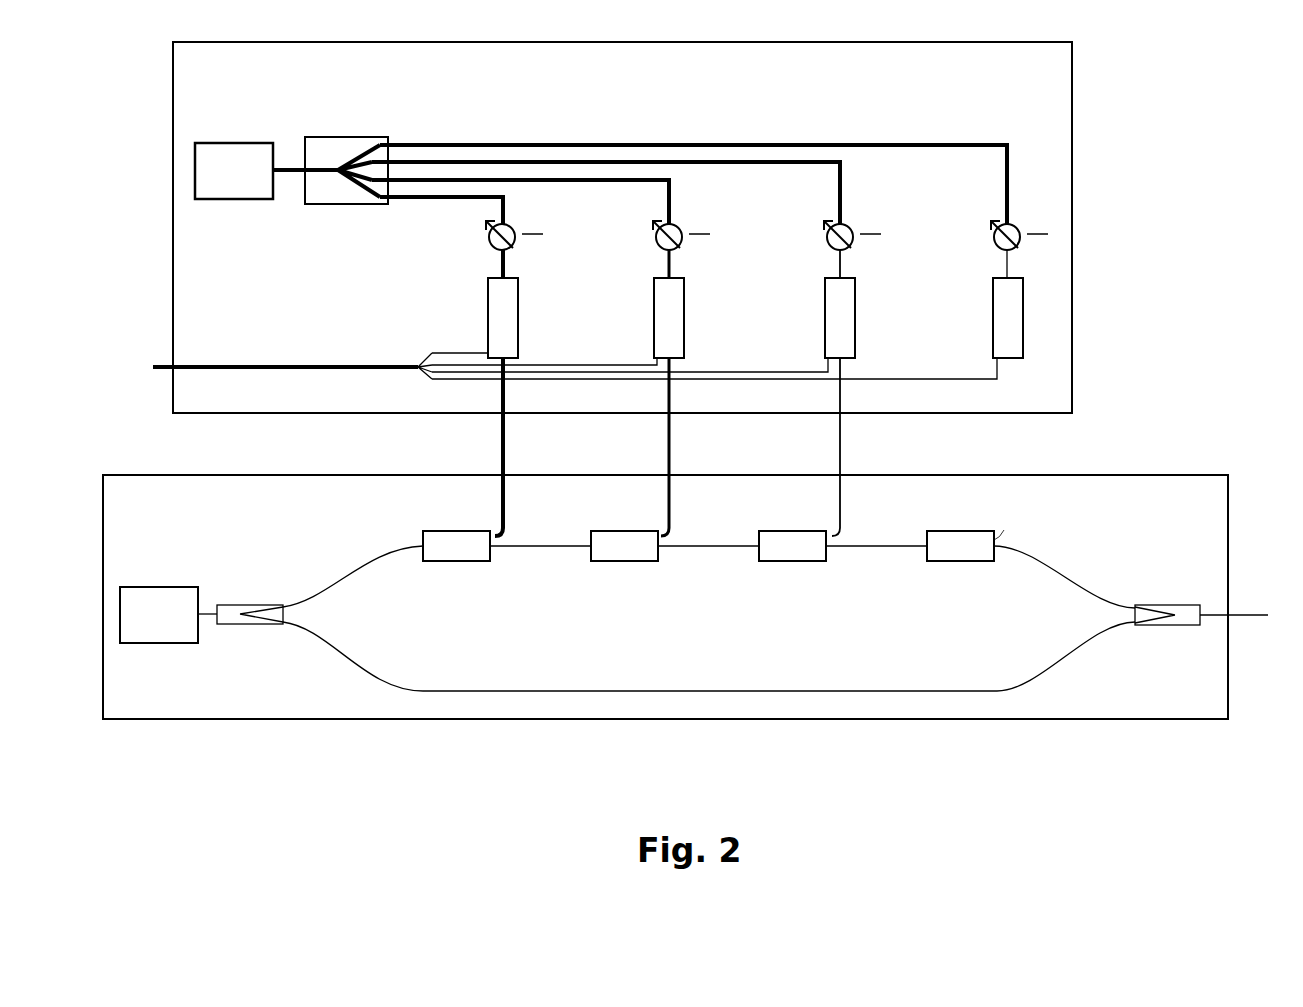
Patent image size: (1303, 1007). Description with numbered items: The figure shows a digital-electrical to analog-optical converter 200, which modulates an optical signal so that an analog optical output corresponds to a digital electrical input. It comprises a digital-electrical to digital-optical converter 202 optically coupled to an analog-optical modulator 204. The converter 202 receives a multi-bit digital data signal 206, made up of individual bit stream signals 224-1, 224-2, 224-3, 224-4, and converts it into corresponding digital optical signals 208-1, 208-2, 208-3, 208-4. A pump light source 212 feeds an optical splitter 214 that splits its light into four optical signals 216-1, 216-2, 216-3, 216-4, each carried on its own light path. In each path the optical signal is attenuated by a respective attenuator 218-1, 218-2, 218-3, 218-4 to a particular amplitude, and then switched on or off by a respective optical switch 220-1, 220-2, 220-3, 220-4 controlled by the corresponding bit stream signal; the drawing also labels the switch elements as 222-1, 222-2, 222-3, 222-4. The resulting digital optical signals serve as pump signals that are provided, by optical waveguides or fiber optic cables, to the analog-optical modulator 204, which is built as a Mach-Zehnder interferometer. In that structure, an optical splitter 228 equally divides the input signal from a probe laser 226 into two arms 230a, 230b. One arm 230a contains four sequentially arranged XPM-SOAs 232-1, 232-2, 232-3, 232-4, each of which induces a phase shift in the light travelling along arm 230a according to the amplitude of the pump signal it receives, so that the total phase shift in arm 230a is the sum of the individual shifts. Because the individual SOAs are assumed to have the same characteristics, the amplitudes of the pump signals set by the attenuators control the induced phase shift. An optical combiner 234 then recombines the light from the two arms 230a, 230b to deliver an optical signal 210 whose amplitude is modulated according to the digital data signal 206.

The digital-electrical to analog-optical converter 200 is at (728, 18).
The digital-electrical to digital-optical converter 202 is at (1048, 95).
The analog-optical modulator 204 is at (1206, 503).
The multi-bit digital data signal 206 is at (130, 352).
The digital optical signal 208-1 is at (500, 440).
The digital optical signal 208-2 is at (667, 440).
The digital optical signal 208-3 is at (838, 440).
The digital optical signal 208-4 is at (1003, 440).
The optical signal 210 is at (1268, 613).
The light source 212 is at (230, 202).
The optical splitter 214 is at (343, 207).
The optical signal 216-1 is at (403, 197).
The optical signal 216-2 is at (492, 180).
The optical signal 216-3 is at (580, 162).
The optical signal 216-4 is at (690, 145).
The attenuator 218-1 is at (483, 232).
The attenuator 218-2 is at (650, 232).
The attenuator 218-3 is at (821, 232).
The attenuator 218-4 is at (987, 232).
The optical switch 220-1 is at (498, 260).
The optical switch 220-2 is at (665, 264).
The optical switch 220-3 is at (836, 265).
The optical switch 220-4 is at (1003, 264).
The optical switch 222-1 is at (488, 300).
The optical switch 222-2 is at (654, 314).
The optical switch 222-3 is at (825, 316).
The optical switch 222-4 is at (993, 332).
The bit stream signal 224-1 is at (425, 360).
The bit stream signal 224-2 is at (633, 363).
The bit stream signal 224-3 is at (795, 370).
The bit stream signal 224-4 is at (975, 378).
The probe laser 226 is at (160, 647).
The optical splitter 228 is at (238, 625).
The arm 230a is at (358, 570).
The arm 230b is at (338, 648).
The XPM-SOA 232-1 is at (455, 562).
The XPM-SOA 232-2 is at (623, 562).
The XPM-SOA 232-3 is at (791, 562).
The XPM-SOA 232-4 is at (959, 562).
The optical combiner 234 is at (1172, 600).